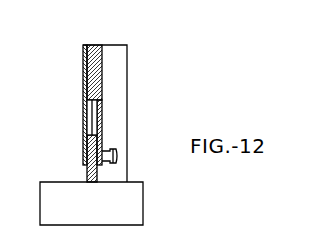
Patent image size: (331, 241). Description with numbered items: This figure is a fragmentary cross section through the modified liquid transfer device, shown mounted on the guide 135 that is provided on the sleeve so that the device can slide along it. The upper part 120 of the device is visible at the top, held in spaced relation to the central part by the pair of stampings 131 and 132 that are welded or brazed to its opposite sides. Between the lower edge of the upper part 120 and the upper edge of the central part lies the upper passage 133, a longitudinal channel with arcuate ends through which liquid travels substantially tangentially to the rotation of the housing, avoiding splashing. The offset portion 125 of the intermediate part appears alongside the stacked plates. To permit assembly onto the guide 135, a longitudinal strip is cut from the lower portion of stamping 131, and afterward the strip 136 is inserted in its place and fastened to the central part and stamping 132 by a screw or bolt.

The upper part 120 is at (93, 45).
The offset portion 125 is at (116, 109).
The stamping 131 is at (102, 77).
The stamping 132 is at (83, 70).
The upper passage 133 is at (88, 118).
The guide 135 is at (87, 172).
The strip 136 is at (102, 170).